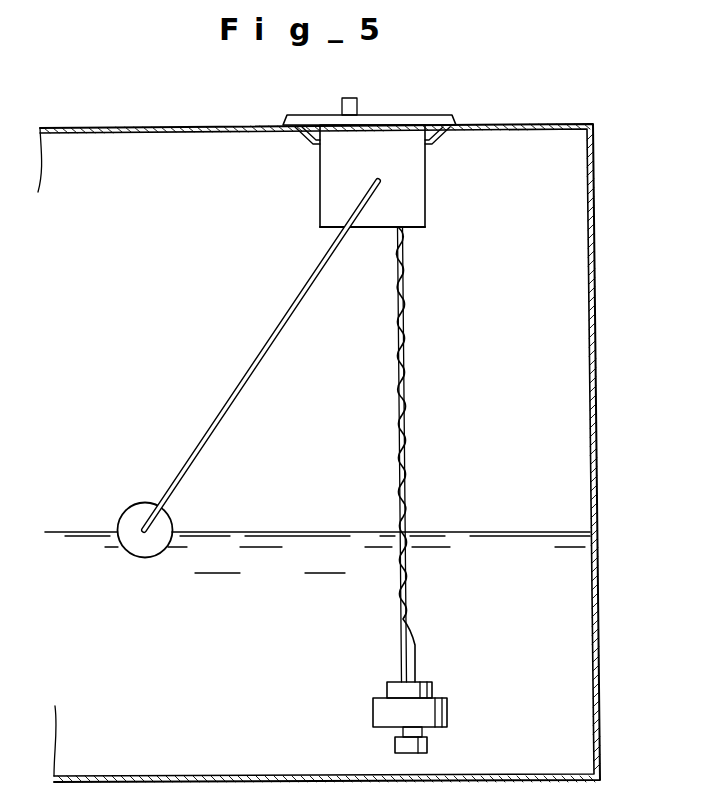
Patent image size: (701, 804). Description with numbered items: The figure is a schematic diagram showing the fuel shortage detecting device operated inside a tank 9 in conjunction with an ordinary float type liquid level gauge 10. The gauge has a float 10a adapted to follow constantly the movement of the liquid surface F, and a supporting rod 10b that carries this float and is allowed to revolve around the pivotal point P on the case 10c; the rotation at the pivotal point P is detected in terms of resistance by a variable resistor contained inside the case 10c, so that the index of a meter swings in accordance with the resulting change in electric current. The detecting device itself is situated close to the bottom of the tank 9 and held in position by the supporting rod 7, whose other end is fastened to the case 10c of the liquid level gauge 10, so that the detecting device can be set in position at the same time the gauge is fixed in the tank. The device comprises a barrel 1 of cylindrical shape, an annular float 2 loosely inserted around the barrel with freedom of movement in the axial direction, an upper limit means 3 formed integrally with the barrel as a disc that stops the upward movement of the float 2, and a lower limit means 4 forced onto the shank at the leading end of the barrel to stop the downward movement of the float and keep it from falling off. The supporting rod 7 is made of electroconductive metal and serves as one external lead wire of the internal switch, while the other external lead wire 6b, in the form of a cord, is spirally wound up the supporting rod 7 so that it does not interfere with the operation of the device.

The barrel 1 is at (403, 733).
The annular float 2 is at (443, 708).
The upper limit means 3 is at (393, 688).
The lower limit means 4 is at (427, 746).
The external lead wire 6b is at (407, 471).
The supporting rod 7 is at (398, 418).
The tank 9 is at (597, 393).
The liquid level gauge 10 is at (294, 328).
The float 10a is at (135, 512).
The supporting rod 10b is at (243, 378).
The case 10c is at (405, 206).
The pivotal point P is at (381, 181).
The liquid surface F is at (304, 548).